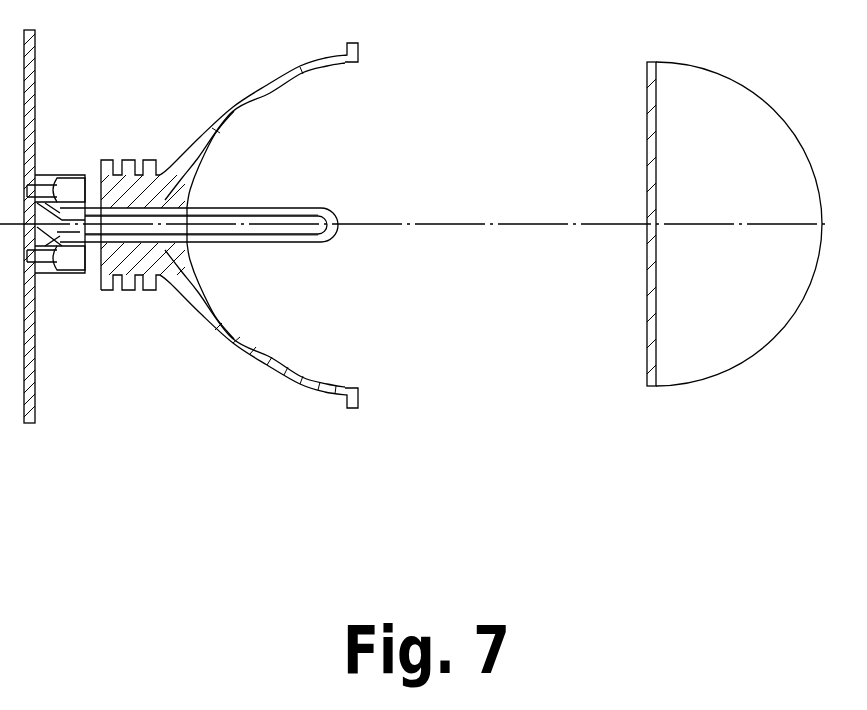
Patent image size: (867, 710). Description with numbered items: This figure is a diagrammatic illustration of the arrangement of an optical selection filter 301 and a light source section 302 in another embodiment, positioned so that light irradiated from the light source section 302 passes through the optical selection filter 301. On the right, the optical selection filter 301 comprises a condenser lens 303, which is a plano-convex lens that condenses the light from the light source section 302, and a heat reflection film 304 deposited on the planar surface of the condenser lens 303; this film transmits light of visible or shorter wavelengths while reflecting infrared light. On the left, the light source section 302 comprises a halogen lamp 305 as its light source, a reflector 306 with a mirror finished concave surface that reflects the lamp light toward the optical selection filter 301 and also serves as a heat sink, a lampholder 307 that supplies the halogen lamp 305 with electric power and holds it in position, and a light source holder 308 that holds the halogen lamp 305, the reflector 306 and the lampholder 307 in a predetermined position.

The optical selection filter 301 is at (706, 259).
The light source section 302 is at (217, 264).
The condenser lens 303 is at (757, 112).
The heat reflection film 304 is at (646, 83).
The halogen lamp 305 is at (327, 207).
The reflector 306 is at (243, 100).
The lampholder 307 is at (42, 176).
The light source holder 308 is at (37, 50).